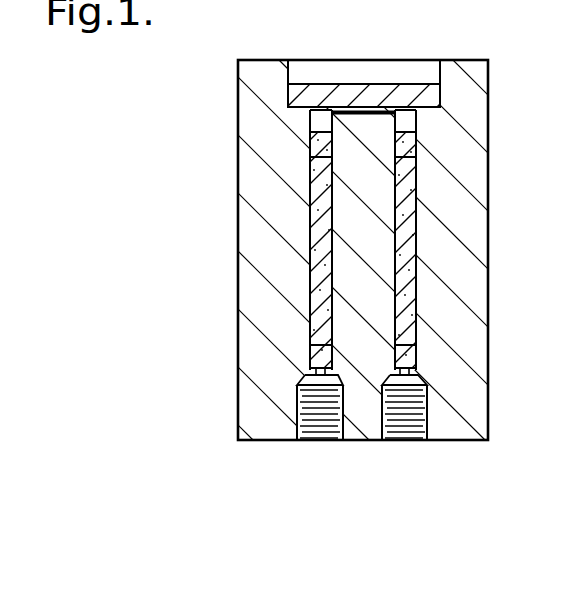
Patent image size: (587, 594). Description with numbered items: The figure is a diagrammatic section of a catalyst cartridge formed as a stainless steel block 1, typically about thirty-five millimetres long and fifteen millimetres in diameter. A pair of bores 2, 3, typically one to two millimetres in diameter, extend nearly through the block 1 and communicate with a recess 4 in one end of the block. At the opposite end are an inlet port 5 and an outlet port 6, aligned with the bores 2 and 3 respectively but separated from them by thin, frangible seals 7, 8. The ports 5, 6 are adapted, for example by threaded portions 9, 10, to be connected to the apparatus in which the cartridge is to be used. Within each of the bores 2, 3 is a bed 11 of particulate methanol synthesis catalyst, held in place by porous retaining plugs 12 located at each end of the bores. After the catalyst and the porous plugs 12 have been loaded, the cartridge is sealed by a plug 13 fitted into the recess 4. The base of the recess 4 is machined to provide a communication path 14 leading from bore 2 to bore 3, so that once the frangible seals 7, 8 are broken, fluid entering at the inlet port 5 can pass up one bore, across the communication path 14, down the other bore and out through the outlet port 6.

The stainless steel block 1 is at (250, 95).
The bore 2 is at (310, 233).
The bore 3 is at (416, 232).
The recess 4 is at (318, 68).
The inlet port 5 is at (315, 437).
The outlet port 6 is at (400, 437).
The frangible seal 7 is at (308, 376).
The frangible seal 8 is at (420, 376).
The threaded portion 9 is at (297, 418).
The threaded portion 10 is at (428, 418).
The bed of particulate methanol synthesis catalyst 11 is at (310, 277).
The porous retaining plug 12 is at (310, 150).
The plug 13 is at (414, 92).
The communication path 14 is at (382, 106).